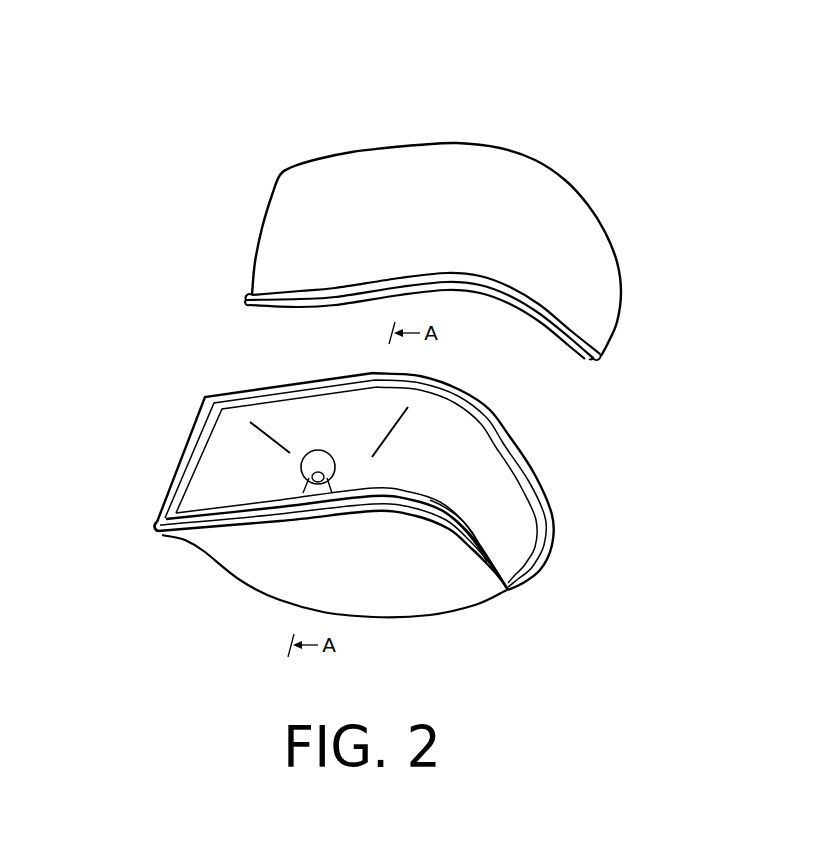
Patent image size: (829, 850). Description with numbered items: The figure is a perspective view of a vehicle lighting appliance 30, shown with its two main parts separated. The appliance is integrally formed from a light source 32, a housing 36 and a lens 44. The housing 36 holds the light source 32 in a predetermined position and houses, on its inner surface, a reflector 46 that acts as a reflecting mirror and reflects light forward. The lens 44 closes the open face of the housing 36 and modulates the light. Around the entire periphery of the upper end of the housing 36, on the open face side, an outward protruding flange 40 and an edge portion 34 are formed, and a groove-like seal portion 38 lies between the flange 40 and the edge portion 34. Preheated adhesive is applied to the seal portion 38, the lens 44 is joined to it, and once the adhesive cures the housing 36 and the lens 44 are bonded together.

The vehicle lighting appliance 30 is at (422, 89).
The light source 32 is at (318, 458).
The edge portion 34 is at (445, 525).
The housing 36 is at (243, 552).
The seal portion 38 is at (463, 557).
The flange 40 is at (157, 523).
The lens 44 is at (423, 167).
The reflector 46 is at (493, 477).